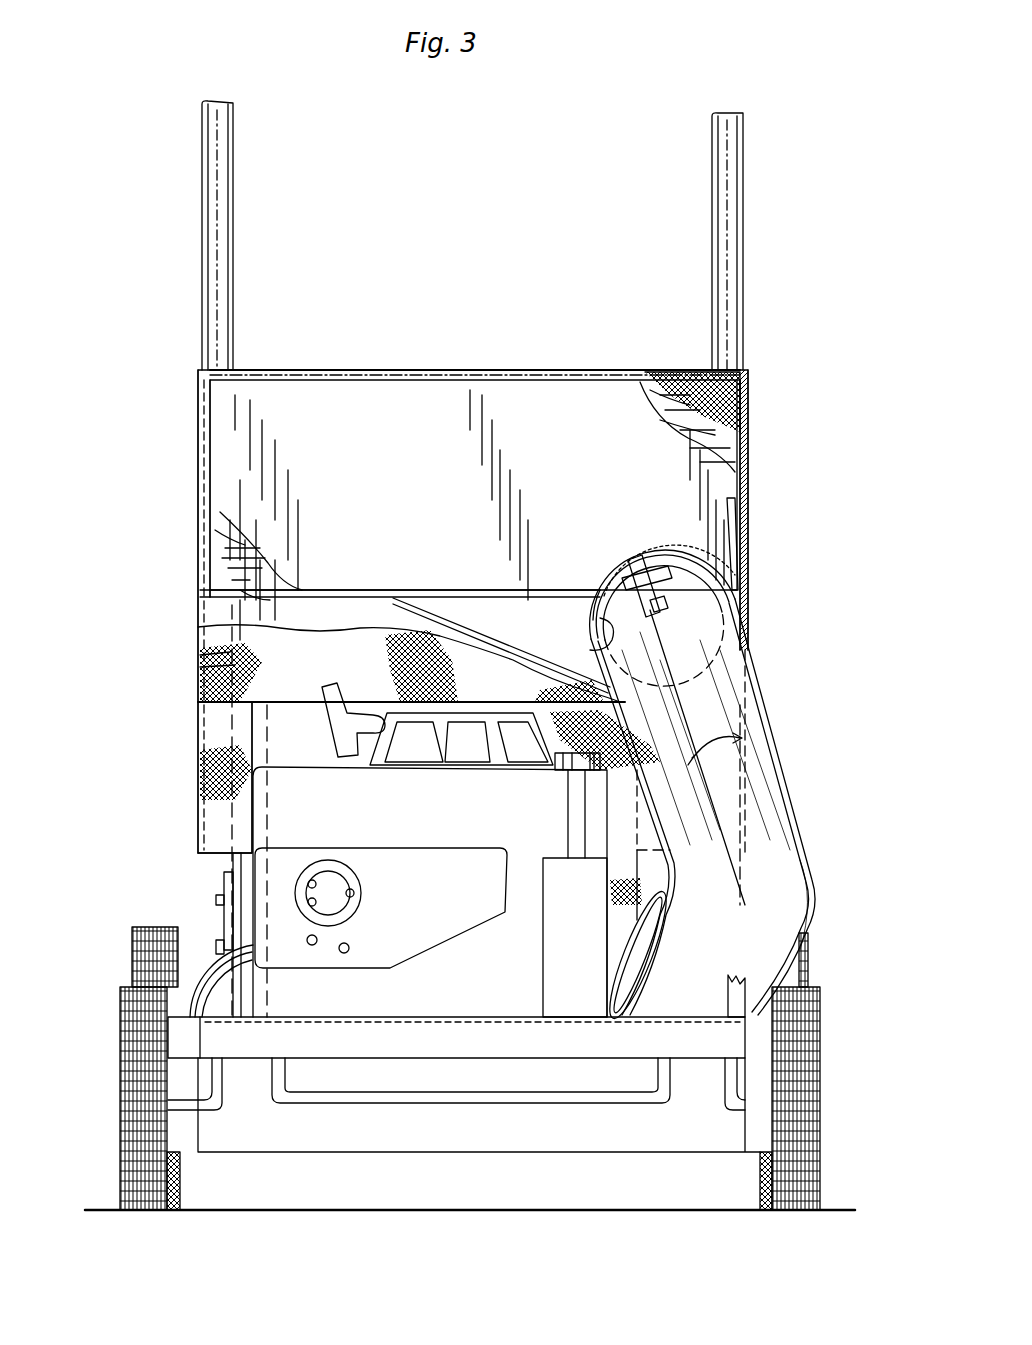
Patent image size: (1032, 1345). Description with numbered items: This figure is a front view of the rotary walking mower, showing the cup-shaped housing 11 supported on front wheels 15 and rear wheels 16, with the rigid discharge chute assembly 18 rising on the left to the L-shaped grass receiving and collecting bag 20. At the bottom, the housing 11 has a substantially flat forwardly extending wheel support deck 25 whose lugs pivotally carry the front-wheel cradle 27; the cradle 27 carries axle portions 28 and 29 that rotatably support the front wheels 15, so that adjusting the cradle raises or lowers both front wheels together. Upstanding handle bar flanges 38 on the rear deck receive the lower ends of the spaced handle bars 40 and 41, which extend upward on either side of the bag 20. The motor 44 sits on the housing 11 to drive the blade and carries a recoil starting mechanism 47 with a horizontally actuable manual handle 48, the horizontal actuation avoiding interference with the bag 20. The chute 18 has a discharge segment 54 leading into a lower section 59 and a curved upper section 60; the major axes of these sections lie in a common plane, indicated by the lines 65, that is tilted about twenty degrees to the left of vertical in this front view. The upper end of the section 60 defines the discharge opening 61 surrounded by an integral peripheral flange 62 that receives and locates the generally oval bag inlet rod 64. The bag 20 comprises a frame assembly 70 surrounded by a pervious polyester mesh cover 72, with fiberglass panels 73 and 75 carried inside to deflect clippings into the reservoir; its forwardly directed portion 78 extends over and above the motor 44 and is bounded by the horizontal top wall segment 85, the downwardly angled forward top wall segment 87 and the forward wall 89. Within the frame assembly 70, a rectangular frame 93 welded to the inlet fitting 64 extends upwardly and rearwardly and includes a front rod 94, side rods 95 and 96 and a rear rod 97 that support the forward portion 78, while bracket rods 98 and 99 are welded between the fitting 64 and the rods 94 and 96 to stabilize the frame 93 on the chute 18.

The housing 11 is at (222, 977).
The front wheels 15 is at (134, 1051).
The rear wheels 16 is at (135, 941).
The discharge chute assembly 18 is at (739, 756).
The grass receiving and collecting container or bag 20 is at (468, 664).
The wheel support deck 25 is at (440, 1015).
The front-wheel cradle 27 is at (420, 1105).
The axle portion 28 is at (208, 1110).
The axle portion 29 is at (740, 1110).
The handle bar flanges 38 is at (224, 876).
The handle bar 40 is at (236, 202).
The handle bar 41 is at (745, 210).
The motor 44 is at (445, 815).
The recoil starting mechanism 47 is at (403, 701).
The manual handle 48 is at (335, 722).
The discharge segment 54 is at (775, 923).
The lower section 59 is at (772, 736).
The upper section 60 is at (700, 624).
The discharge opening 61 is at (655, 566).
The peripheral flange 62 is at (600, 628).
The bag inlet rod 64 is at (668, 560).
The lines 65 is at (722, 822).
The frame assembly 70 is at (529, 669).
The mesh material cover 72 is at (300, 672).
The fiberglass panel 73 is at (225, 548).
The fiberglass panel 75 is at (352, 398).
The forwardly directed portion 78 is at (254, 513).
The horizontal top wall segment 85 is at (606, 370).
The forward top wall segment 87 is at (730, 398).
The forward wall 89 is at (212, 661).
The rectangular frame 93 is at (514, 363).
The front rod 94 is at (470, 592).
The side rod 95 is at (205, 456).
The side rod 96 is at (746, 476).
The rear rod 97 is at (445, 376).
The bracket rod 98 is at (490, 640).
The bracket rod 99 is at (736, 546).